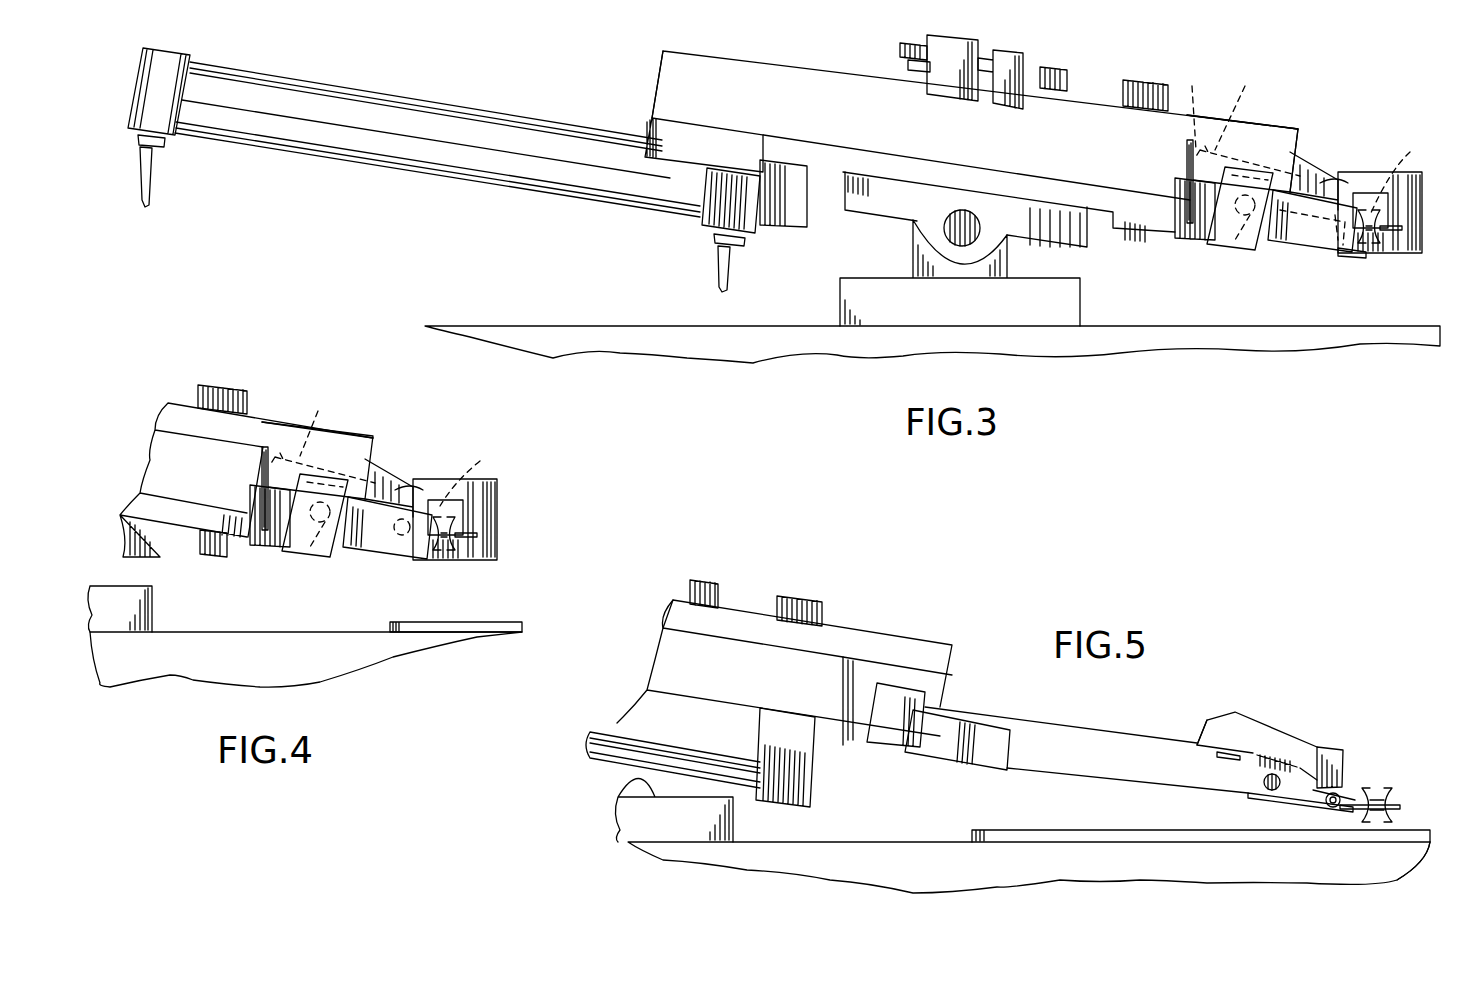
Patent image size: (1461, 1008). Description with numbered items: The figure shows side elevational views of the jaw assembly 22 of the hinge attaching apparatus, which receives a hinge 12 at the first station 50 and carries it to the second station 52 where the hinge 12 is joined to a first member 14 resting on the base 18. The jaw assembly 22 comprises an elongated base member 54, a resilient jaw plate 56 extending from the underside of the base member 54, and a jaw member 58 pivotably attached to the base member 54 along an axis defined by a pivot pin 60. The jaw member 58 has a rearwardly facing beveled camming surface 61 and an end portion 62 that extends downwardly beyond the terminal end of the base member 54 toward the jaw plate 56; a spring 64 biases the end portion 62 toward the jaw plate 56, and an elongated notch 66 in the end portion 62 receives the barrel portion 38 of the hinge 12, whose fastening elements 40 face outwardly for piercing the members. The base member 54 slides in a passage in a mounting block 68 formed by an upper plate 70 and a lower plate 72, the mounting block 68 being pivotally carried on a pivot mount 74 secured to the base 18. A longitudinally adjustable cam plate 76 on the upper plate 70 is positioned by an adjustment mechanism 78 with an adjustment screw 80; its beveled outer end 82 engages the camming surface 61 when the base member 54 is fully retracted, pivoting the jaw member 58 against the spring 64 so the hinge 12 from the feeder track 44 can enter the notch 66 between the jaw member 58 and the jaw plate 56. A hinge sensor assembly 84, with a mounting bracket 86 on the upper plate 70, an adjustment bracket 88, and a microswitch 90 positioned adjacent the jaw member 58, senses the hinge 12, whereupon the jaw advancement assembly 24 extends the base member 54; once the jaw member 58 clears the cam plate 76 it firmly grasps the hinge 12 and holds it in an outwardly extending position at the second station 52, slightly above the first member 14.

In FIG. 3, the hinge 12 is at (1370, 240).
In FIG. 4, the hinge 12 is at (466, 521).
In FIG. 5, the hinge 12 is at (1400, 811).
In FIG. 4, the first member 14 is at (445, 626).
In FIG. 5, the first member 14 is at (1130, 833).
In FIG. 3, the base 18 is at (748, 352).
In FIG. 4, the base 18 is at (190, 679).
In FIG. 5, the base 18 is at (820, 857).
In FIG. 3, the jaw assembly 22 is at (1283, 129).
In FIG. 4, the jaw assembly 22 is at (255, 409).
In FIG. 5, the jaw assembly 22 is at (1252, 711).
In FIG. 3, the jaw advancement assembly 24 is at (500, 143).
In FIG. 5, the jaw advancement assembly 24 is at (715, 788).
In FIG. 4, the barrel portion 38 is at (447, 485).
In FIG. 5, the barrel portion 38 is at (1330, 811).
In FIG. 3, the fastening elements 40 is at (1392, 226).
In FIG. 4, the fastening elements 40 is at (495, 554).
In FIG. 5, the fastening elements 40 is at (1390, 793).
In FIG. 3, the feeder track 44 is at (1422, 171).
In FIG. 4, the feeder track 44 is at (497, 481).
In FIG. 3, the first station 50 is at (1362, 256).
In FIG. 5, the second station 52 is at (1405, 856).
In FIG. 5, the base member 54 is at (1113, 745).
In FIG. 5, the resilient jaw plate 56 is at (1318, 806).
In FIG. 3, the jaw member 58 is at (1304, 166).
In FIG. 4, the jaw member 58 is at (378, 473).
In FIG. 5, the jaw member 58 is at (1275, 736).
In FIG. 3, the pivot pin 60 is at (1232, 218).
In FIG. 4, the pivot pin 60 is at (322, 556).
In FIG. 5, the pivot pin 60 is at (1282, 780).
In FIG. 3, the beveled camming surface 61 is at (1192, 105).
In FIG. 5, the beveled camming surface 61 is at (1210, 719).
In FIG. 3, the end portion 62 is at (1325, 180).
In FIG. 4, the end portion 62 is at (398, 489).
In FIG. 5, the end portion 62 is at (1340, 767).
In FIG. 5, the spring 64 is at (1230, 752).
In FIG. 3, the elongated notch 66 is at (1400, 171).
In FIG. 5, the elongated notch 66 is at (1340, 798).
In FIG. 3, the mounting block 68 is at (830, 73).
In FIG. 3, the upper plate 70 is at (738, 88).
In FIG. 4, the upper plate 70 is at (200, 491).
In FIG. 5, the upper plate 70 is at (680, 650).
In FIG. 3, the lower plate 72 is at (672, 130).
In FIG. 5, the lower plate 72 is at (740, 715).
In FIG. 3, the pivot mount 74 is at (1005, 256).
In FIG. 4, the pivot mount 74 is at (108, 611).
In FIG. 5, the pivot mount 74 is at (622, 800).
In FIG. 3, the cam plate 76 is at (1012, 88).
In FIG. 3, the adjustment mechanism 78 is at (968, 50).
In FIG. 3, the adjustment screw 80 is at (905, 45).
In FIG. 3, the beveled outer end 82 is at (1236, 105).
In FIG. 4, the beveled outer end 82 is at (317, 421).
In FIG. 3, the hinge sensor assembly 84 is at (1258, 118).
In FIG. 4, the hinge sensor assembly 84 is at (352, 434).
In FIG. 5, the hinge sensor assembly 84 is at (878, 630).
In FIG. 3, the mounting bracket 86 is at (1090, 104).
In FIG. 4, the mounting bracket 86 is at (172, 416).
In FIG. 5, the mounting bracket 86 is at (920, 640).
In FIG. 3, the adjustment bracket 88 is at (1275, 242).
In FIG. 5, the adjustment bracket 88 is at (960, 745).
In FIG. 5, the microswitch 90 is at (975, 715).